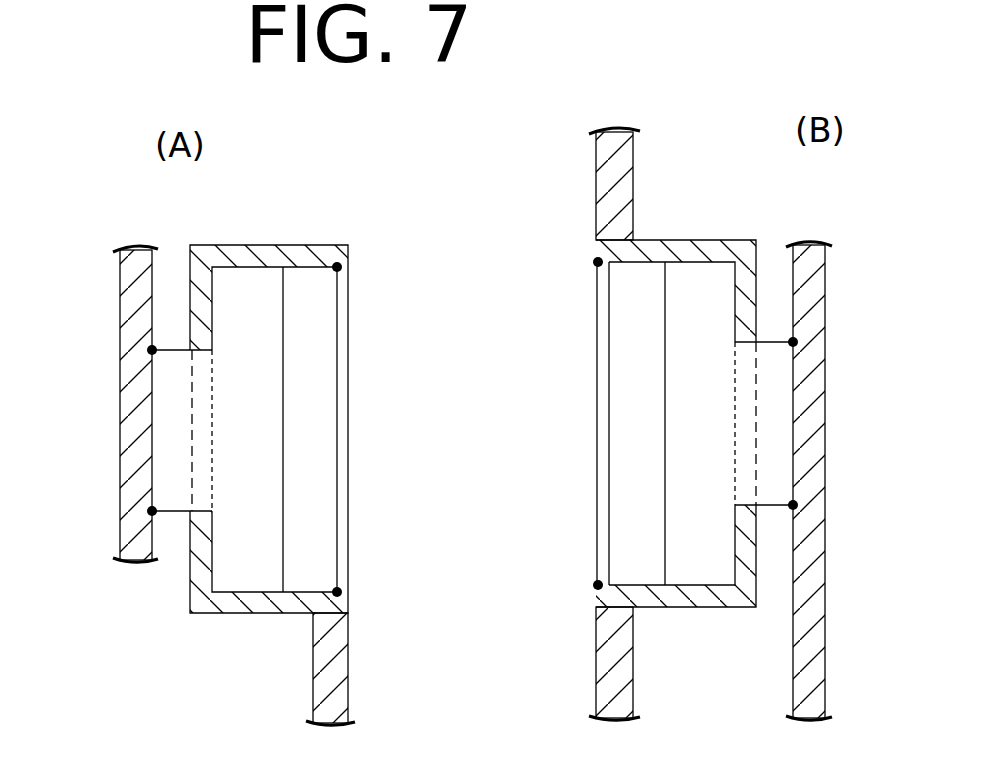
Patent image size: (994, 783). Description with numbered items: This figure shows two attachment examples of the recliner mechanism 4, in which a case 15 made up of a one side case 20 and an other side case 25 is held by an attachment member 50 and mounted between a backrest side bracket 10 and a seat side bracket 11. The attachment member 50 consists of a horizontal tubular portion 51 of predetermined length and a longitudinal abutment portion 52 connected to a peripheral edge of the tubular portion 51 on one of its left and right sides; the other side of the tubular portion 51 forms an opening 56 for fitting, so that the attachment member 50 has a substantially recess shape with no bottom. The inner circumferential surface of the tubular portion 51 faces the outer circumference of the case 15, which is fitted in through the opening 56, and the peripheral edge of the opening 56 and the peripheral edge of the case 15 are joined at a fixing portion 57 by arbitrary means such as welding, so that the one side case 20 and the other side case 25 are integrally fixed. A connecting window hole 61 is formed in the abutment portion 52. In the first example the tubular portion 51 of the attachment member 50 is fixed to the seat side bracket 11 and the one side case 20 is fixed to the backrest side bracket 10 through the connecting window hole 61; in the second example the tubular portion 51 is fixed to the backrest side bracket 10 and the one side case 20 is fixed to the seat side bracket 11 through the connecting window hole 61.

The recliner mechanism 4 is at (471, 423).
The backrest side bracket 10 is at (118, 333).
The seat side bracket 11 is at (340, 664).
The case 15 is at (337, 427).
The one side case 20 is at (165, 407).
The other side case 25 is at (330, 366).
The attachment member 50 is at (477, 408).
The tubular portion 51 is at (320, 245).
The abutment portion 52 is at (190, 290).
The opening for fitting 56 is at (345, 522).
The fixing portion 57 is at (337, 267).
The connecting window hole 61 is at (215, 422).